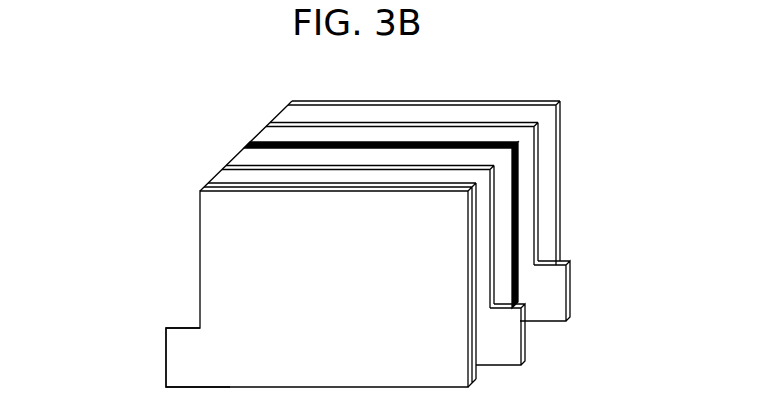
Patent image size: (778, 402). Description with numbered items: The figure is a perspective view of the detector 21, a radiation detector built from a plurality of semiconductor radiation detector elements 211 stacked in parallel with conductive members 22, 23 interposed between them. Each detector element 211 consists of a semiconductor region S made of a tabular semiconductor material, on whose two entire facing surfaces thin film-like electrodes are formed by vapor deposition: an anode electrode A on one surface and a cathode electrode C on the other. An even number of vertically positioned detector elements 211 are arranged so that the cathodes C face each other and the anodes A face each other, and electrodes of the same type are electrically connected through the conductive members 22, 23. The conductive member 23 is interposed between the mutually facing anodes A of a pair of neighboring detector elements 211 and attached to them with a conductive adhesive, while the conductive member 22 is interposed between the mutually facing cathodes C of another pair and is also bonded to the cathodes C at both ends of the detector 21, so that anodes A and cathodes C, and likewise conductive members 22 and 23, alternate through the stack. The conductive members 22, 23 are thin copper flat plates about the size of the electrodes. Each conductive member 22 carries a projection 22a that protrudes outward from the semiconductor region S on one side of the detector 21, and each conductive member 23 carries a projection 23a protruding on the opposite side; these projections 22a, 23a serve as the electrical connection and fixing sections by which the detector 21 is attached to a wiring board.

The detector 21 is at (375, 215).
The conductive member 22 is at (292, 147).
The projection 22a is at (182, 357).
The conductive member 23 is at (300, 124).
The projection 23a is at (553, 296).
The semiconductor radiation detector element 211 is at (485, 277).
The anode electrode A is at (240, 157).
The semiconductor region S is at (337, 182).
The cathode electrode C is at (486, 184).